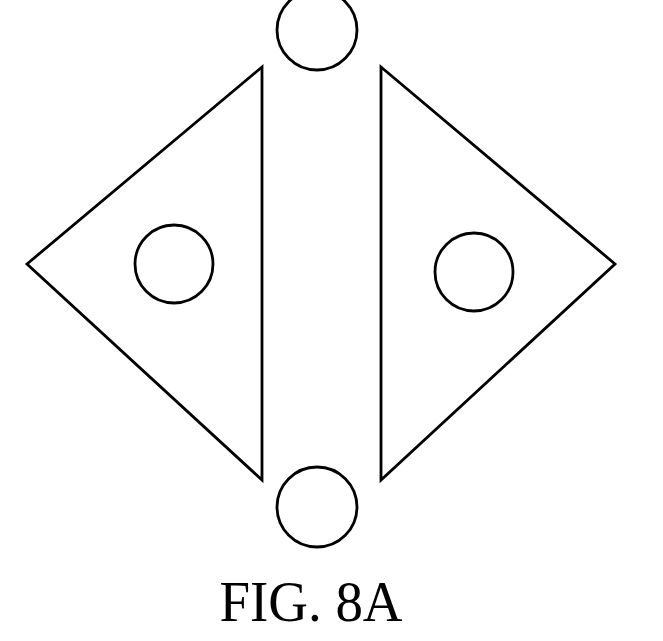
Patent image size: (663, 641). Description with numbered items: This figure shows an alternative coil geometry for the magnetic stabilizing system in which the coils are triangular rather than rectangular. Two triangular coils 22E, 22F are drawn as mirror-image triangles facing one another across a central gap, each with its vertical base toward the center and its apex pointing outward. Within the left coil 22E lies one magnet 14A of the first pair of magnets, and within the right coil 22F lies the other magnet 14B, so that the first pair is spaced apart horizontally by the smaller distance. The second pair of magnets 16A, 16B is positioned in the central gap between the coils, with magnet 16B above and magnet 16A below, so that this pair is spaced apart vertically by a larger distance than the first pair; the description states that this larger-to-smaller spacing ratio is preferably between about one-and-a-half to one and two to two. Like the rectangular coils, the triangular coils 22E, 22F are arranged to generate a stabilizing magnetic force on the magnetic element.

The triangular coil 22E is at (163, 150).
The triangular coil 22F is at (485, 154).
The magnet of second pair 16A is at (342, 519).
The magnet of second pair 16B is at (342, 40).
The magnet of first pair 14A is at (148, 275).
The magnet of first pair 14B is at (448, 283).